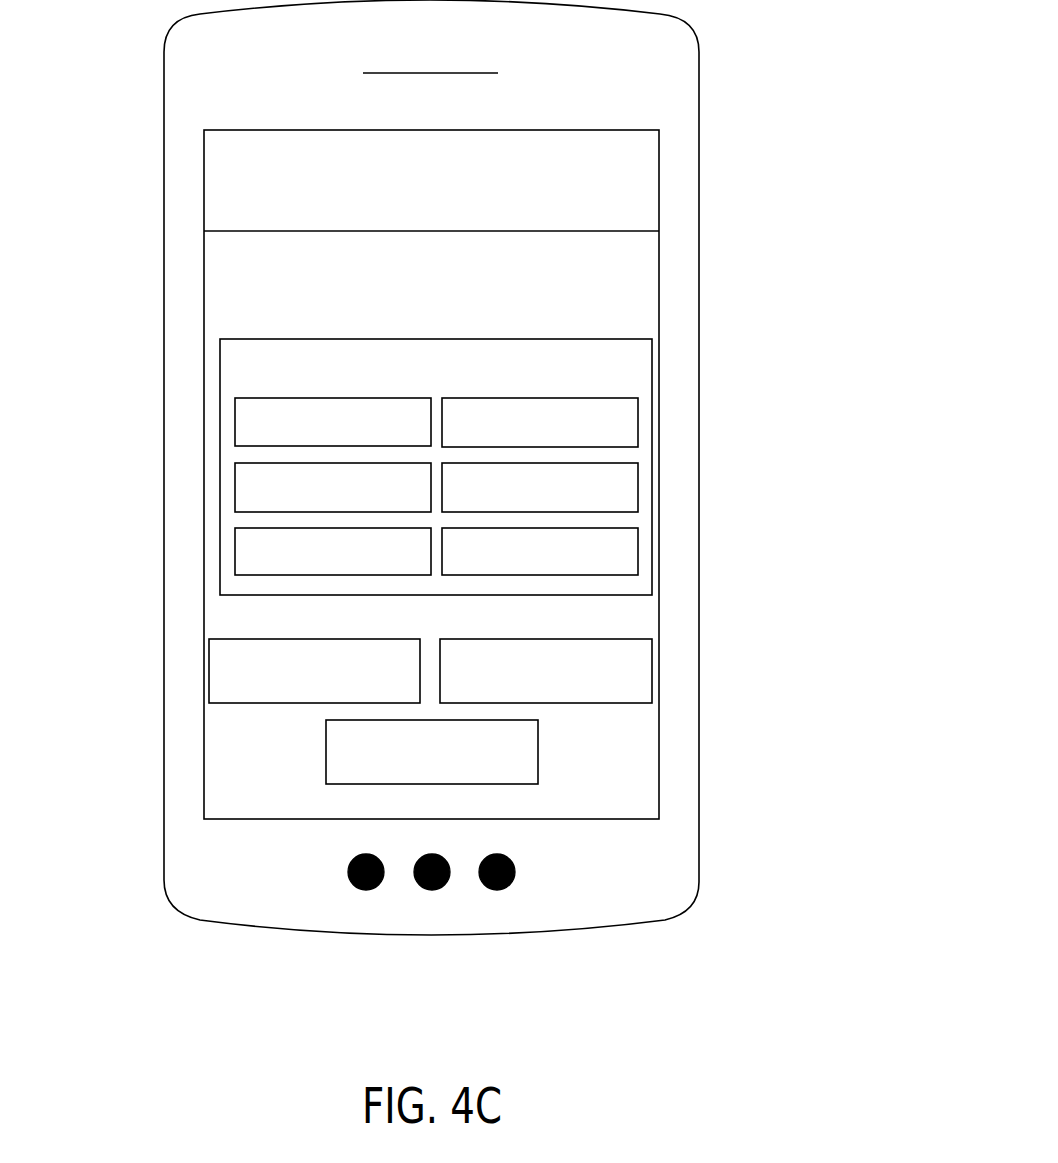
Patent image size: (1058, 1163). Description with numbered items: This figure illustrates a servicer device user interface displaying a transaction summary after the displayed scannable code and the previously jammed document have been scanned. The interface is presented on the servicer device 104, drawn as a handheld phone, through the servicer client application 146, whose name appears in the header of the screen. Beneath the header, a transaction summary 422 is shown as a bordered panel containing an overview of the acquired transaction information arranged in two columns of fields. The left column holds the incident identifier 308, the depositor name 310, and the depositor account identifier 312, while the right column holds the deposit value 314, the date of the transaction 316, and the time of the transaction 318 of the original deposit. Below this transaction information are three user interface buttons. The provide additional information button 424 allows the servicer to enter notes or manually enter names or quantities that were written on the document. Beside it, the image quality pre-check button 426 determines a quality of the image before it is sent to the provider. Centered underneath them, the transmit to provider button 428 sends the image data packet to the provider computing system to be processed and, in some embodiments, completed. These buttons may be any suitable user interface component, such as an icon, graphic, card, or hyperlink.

The servicer device 104 is at (200, 40).
The servicer client application 146 is at (245, 188).
The transaction summary 422 is at (245, 338).
The incident identifier 308 is at (222, 408).
The depositor name 310 is at (222, 486).
The depositor account identifier 312 is at (222, 553).
The deposit value 314 is at (640, 412).
The date of the transaction 316 is at (640, 486).
The time of the transaction 318 is at (640, 550).
The provide additional information button 424 is at (209, 663).
The image quality pre-check button 426 is at (652, 663).
The transmit to provider button 428 is at (538, 750).